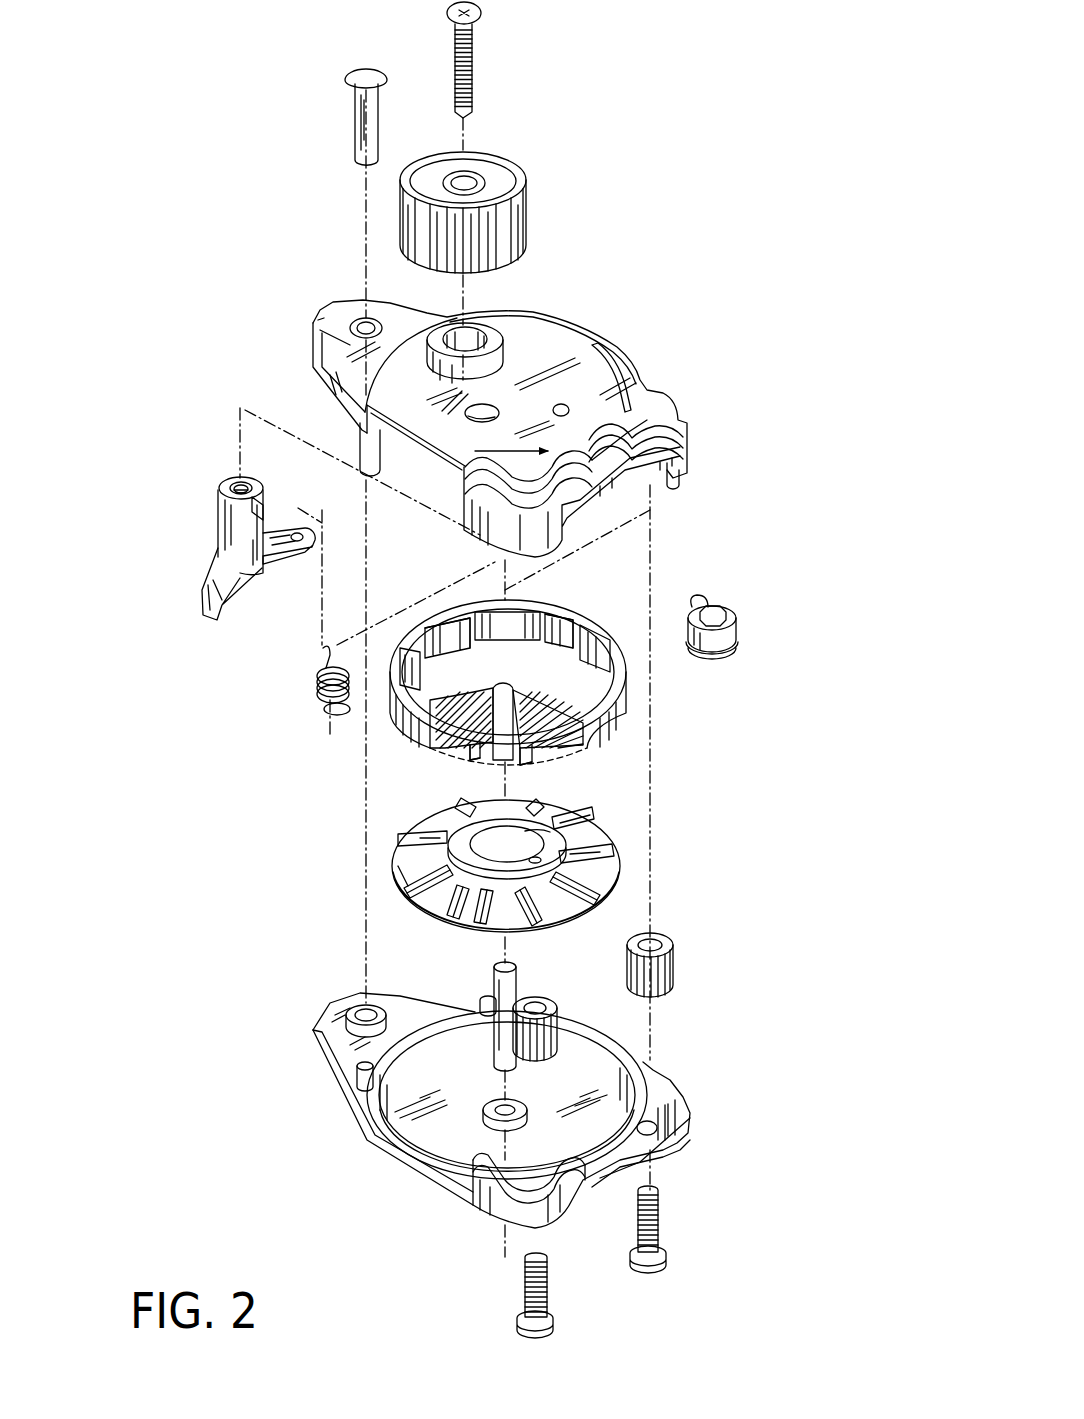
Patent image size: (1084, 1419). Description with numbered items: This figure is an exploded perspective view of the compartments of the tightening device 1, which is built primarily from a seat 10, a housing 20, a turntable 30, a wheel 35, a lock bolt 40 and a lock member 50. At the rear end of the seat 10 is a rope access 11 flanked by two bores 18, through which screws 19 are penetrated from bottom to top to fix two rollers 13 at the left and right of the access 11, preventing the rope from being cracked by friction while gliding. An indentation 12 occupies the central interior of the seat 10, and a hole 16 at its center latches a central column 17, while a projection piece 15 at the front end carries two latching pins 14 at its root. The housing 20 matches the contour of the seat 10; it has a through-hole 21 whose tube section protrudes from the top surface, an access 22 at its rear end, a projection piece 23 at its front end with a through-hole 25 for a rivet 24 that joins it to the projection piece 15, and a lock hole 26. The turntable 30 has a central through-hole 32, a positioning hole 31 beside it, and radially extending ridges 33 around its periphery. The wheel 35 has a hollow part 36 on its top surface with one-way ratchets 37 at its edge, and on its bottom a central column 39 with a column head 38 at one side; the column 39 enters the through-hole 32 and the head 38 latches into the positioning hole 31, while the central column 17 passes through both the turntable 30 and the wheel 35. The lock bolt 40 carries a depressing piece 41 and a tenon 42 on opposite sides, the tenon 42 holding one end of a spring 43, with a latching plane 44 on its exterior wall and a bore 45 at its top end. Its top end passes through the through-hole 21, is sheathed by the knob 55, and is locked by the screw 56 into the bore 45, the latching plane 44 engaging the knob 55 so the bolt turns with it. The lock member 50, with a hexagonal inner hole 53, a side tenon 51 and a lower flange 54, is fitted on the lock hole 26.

The tightening device 1 is at (752, 264).
The seat 10 is at (663, 1078).
The rope access 11 is at (660, 1163).
The indentation 12 is at (560, 1083).
The rollers 13 is at (675, 973).
The latching pins 14 is at (357, 1075).
The projection piece 15 is at (327, 1030).
The hole 16 is at (483, 1113).
The central column 17 is at (493, 985).
The bores 18 is at (688, 1100).
The screws 19 is at (525, 1288).
The housing 20 is at (560, 340).
The through-hole 21 is at (482, 330).
The access 22 is at (635, 490).
The projection piece 23 is at (313, 360).
The rivet 24 is at (352, 126).
The through-hole 25 is at (362, 322).
The lock hole 26 is at (470, 413).
The turntable 30 is at (605, 867).
The positioning hole 31 is at (548, 833).
The through-hole 32 is at (480, 843).
The ridges 33 is at (397, 867).
The wheel 35 is at (612, 703).
The hollow part 36 is at (560, 668).
The one-way ratchets 37 is at (410, 658).
The column head 38 is at (535, 760).
The central column 39 is at (465, 752).
The lock bolt 40 is at (218, 510).
The depressing piece 41 is at (202, 582).
The tenon 42 is at (280, 560).
The spring 43 is at (320, 688).
The latching plane 44 is at (227, 483).
The bore 45 is at (243, 484).
The lock member 50 is at (740, 628).
The tenon 51 is at (700, 596).
The hexagonal inner hole 53 is at (725, 610).
The flange 54 is at (722, 655).
The knob 55 is at (527, 210).
The screw 56 is at (475, 70).